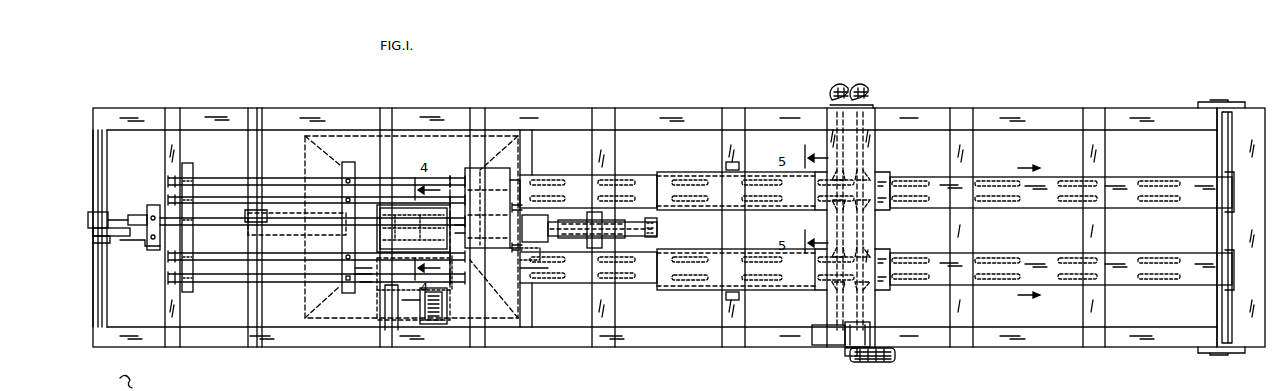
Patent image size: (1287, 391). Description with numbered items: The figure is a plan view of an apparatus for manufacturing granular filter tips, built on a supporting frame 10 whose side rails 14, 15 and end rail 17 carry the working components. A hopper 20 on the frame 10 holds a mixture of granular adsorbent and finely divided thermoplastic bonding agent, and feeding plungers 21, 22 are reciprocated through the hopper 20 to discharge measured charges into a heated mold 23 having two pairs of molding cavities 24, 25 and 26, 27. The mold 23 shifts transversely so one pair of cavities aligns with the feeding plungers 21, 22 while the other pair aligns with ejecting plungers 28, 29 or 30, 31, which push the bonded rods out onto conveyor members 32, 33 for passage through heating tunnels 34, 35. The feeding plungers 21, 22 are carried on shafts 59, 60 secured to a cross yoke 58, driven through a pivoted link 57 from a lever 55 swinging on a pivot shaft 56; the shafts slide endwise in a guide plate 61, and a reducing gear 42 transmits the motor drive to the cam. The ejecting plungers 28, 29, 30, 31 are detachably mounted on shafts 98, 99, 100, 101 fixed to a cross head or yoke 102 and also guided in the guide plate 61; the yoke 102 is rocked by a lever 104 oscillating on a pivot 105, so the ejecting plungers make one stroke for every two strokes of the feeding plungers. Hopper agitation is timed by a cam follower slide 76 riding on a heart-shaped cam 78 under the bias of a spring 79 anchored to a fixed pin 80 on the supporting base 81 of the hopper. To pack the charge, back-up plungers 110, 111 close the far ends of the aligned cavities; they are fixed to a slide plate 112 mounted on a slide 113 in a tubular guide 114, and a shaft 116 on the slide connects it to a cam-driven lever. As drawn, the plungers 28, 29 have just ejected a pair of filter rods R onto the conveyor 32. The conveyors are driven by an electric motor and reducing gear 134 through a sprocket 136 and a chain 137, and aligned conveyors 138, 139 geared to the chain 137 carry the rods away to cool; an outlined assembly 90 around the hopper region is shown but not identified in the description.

The supporting frame 10 is at (680, 100).
The side rail 14 is at (770, 107).
The side rail 15 is at (781, 341).
The end rail 17 is at (1222, 108).
The hopper 20 is at (403, 205).
The feeding plunger 21 is at (462, 270).
The feeding plunger 22 is at (459, 176).
The heated mold 23 is at (485, 168).
The molding cavity 24 is at (512, 270).
The molding cavity 25 is at (495, 290).
The molding cavity 26 is at (510, 140).
The molding cavity 27 is at (490, 172).
The ejecting plunger 28 is at (517, 175).
The ejecting plunger 29 is at (520, 200).
The ejecting plunger 30 is at (470, 250).
The ejecting plunger 31 is at (533, 270).
The conveyor member 32 is at (641, 178).
The conveyor member 33 is at (640, 284).
The heating tunnel 34 is at (714, 185).
The heating tunnel 35 is at (716, 278).
The reducing gear 42 is at (153, 205).
The lever 55 is at (115, 212).
The pivot shaft 56 is at (103, 153).
The pivoted link 57 is at (105, 251).
The cross yoke 58 is at (150, 250).
The shaft 59 is at (139, 215).
The shaft 60 is at (137, 238).
The guide plate 61 is at (188, 170).
The cam follower slide 76 is at (360, 300).
The cam 78 is at (390, 325).
The spring 79 is at (393, 270).
The fixed pin 80 is at (432, 322).
The supporting base 81 is at (442, 320).
The feed unit 90 is at (478, 107).
The shaft 98 is at (297, 176).
The shaft 99 is at (280, 195).
The shaft 100 is at (298, 262).
The shaft 101 is at (292, 284).
The cross head or yoke 102 is at (349, 166).
The lever 104 is at (290, 230).
The pivot 105 is at (255, 312).
The back-up plunger 110 is at (520, 206).
The back-up plunger 111 is at (520, 262).
The slide plate 112 is at (540, 220).
The slide 113 is at (558, 228).
The tubular guide 114 is at (657, 224).
The shaft 116 is at (610, 243).
The electric motor and reducing gear 134 is at (838, 340).
The sprocket 136 is at (848, 356).
The chain 137 is at (896, 356).
The aligned conveyor 138 is at (1052, 177).
The aligned conveyor 139 is at (1050, 253).
The filter rods R is at (548, 176).